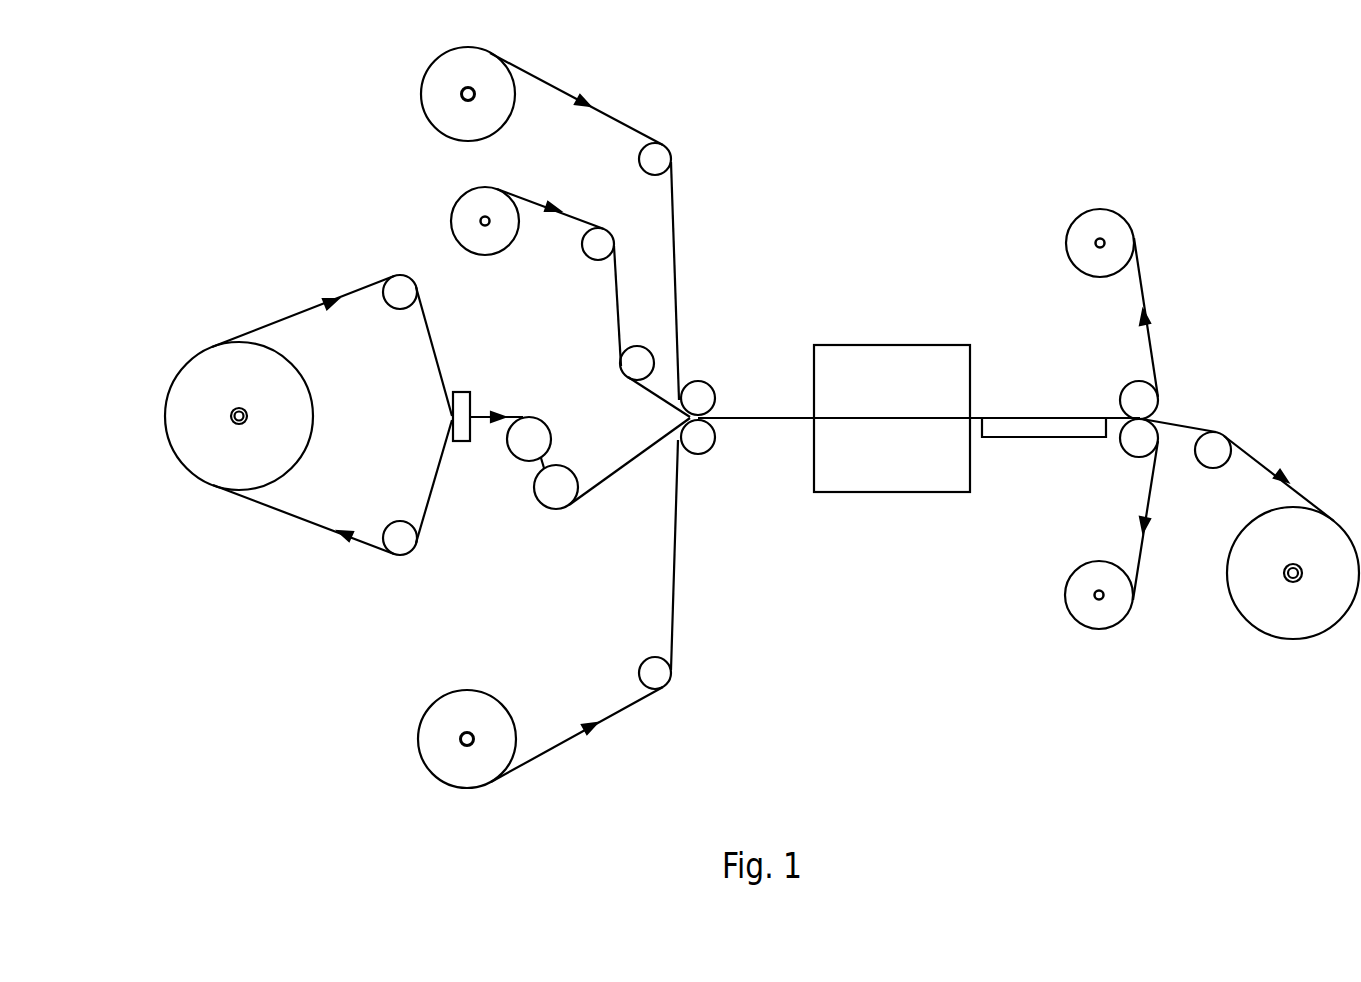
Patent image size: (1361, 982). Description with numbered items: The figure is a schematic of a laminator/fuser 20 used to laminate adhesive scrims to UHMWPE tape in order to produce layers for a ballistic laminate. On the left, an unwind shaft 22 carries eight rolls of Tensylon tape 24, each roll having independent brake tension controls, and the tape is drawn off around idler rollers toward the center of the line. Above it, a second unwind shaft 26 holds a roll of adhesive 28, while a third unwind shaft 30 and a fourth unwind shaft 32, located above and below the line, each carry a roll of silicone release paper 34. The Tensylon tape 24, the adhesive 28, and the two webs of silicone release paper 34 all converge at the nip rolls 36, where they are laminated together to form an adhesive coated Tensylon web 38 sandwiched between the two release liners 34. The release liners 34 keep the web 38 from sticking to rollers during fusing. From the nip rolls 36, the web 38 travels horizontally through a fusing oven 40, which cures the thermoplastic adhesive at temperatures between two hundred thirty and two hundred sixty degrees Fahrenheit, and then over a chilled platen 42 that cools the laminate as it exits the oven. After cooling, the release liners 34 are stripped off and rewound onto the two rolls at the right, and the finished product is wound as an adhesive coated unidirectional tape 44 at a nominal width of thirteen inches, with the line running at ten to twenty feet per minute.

The laminator/fuser 20 is at (852, 135).
The unwind shaft 22 is at (249, 410).
The Tensylon tape 24 is at (247, 391).
The second unwind shaft 26 is at (480, 218).
The adhesive 28 is at (466, 230).
The third unwind shaft 30 is at (462, 100).
The fourth unwind shaft 32 is at (460, 745).
The silicone release paper 34 is at (483, 80).
The nip rolls 36 is at (708, 473).
The adhesive coated Tensylon web 38 is at (757, 419).
The fusing oven 40 is at (902, 456).
The chilled platen 42 is at (1043, 437).
The adhesive coated unidirectional tape 44 is at (1307, 550).